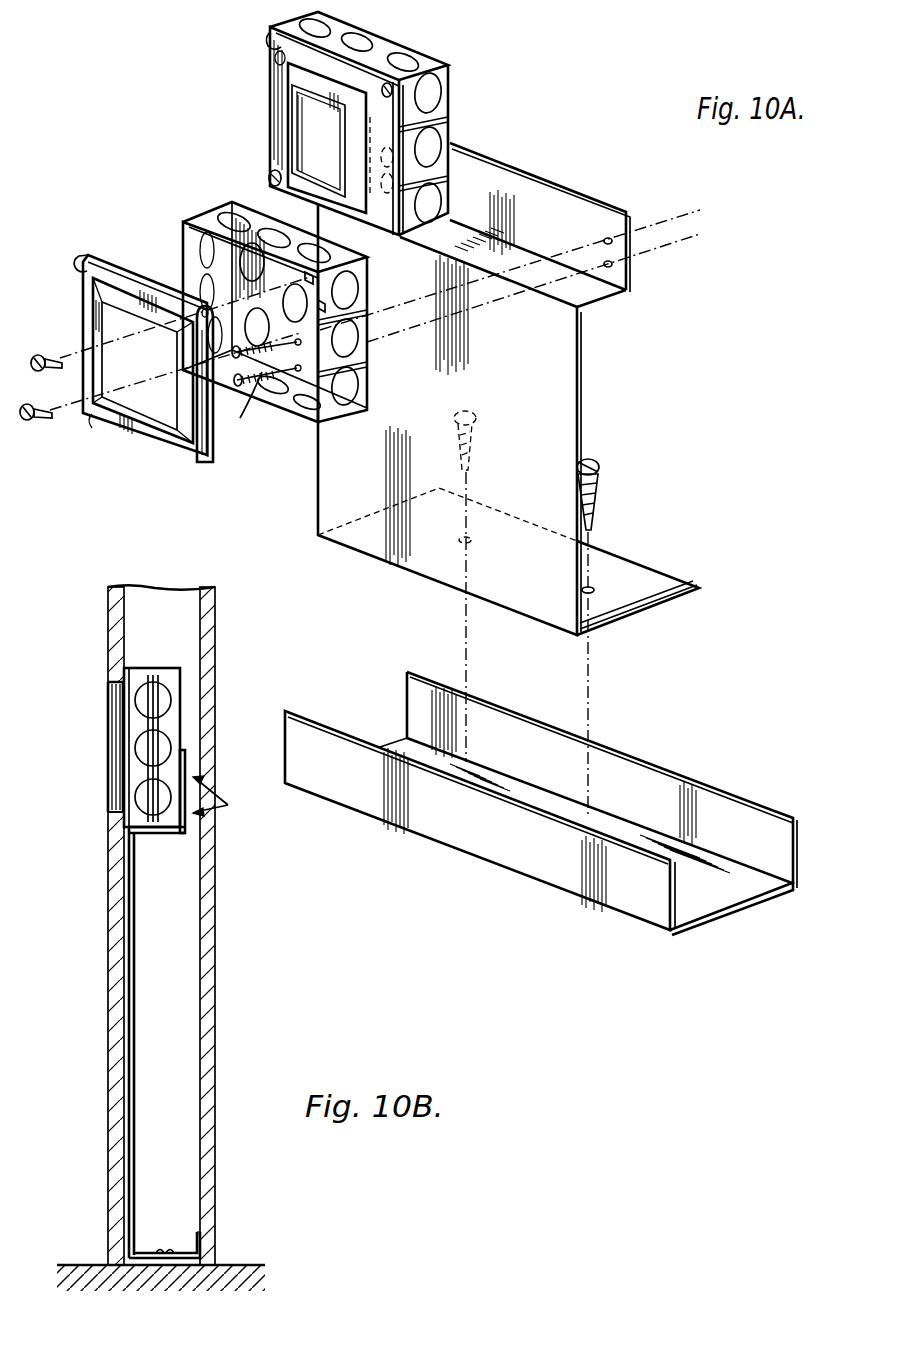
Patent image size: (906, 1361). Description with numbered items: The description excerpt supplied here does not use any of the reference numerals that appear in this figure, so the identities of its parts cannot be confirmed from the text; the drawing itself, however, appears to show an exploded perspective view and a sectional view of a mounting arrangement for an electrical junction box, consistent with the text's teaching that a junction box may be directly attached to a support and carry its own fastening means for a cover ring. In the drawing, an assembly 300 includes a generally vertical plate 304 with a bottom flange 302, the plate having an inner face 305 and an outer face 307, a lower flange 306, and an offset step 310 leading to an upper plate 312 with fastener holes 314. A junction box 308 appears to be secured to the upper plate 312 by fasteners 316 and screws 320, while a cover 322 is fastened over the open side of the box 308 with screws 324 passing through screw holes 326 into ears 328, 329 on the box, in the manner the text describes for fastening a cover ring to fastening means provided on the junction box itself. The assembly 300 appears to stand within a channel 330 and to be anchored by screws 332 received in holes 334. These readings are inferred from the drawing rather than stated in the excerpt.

In FIG. 10A, the mounting bracket 300 is at (524, 396).
In FIG. 10B, the mounting bracket 300 is at (164, 991).
In FIG. 10B, the bottom flange 302 is at (197, 1242).
In FIG. 10A, the vertical plate 304 is at (577, 385).
In FIG. 10B, the vertical plate 304 is at (130, 1027).
In FIG. 10B, the inner face of plate 305 is at (158, 1077).
In FIG. 10A, the lower flange 306 is at (628, 295).
In FIG. 10B, the outer face of plate 307 is at (128, 1097).
In FIG. 10A, the electrical box 308 is at (393, 50).
In FIG. 10B, the electrical box 308 is at (175, 633).
In FIG. 10A, the offset step 310 is at (600, 302).
In FIG. 10B, the offset step 310 is at (160, 836).
In FIG. 10A, the upper plate 312 is at (600, 198).
In FIG. 10B, the upper plate 312 is at (188, 760).
In FIG. 10A, the fastener holes 314 is at (627, 260).
In FIG. 10A, the fasteners 316 is at (247, 407).
In FIG. 10B, the fasteners 316 is at (230, 799).
In FIG. 10A, the screws 320 is at (298, 370).
In FIG. 10A, the cover plate 322 is at (271, 79).
In FIG. 10B, the cover plate 322 is at (108, 700).
In FIG. 10A, the cover screws 324 is at (272, 162).
In FIG. 10A, the screw holes 326 is at (272, 193).
In FIG. 10A, the mounting ear 328 is at (325, 305).
In FIG. 10A, the mounting ear 329 is at (313, 277).
In FIG. 10A, the channel / floor 330 is at (797, 826).
In FIG. 10B, the channel / floor 330 is at (83, 1264).
In FIG. 10A, the anchor screw 332 is at (477, 416).
In FIG. 10B, the anchor screw 332 is at (165, 1250).
In FIG. 10A, the anchor hole 334 is at (473, 542).